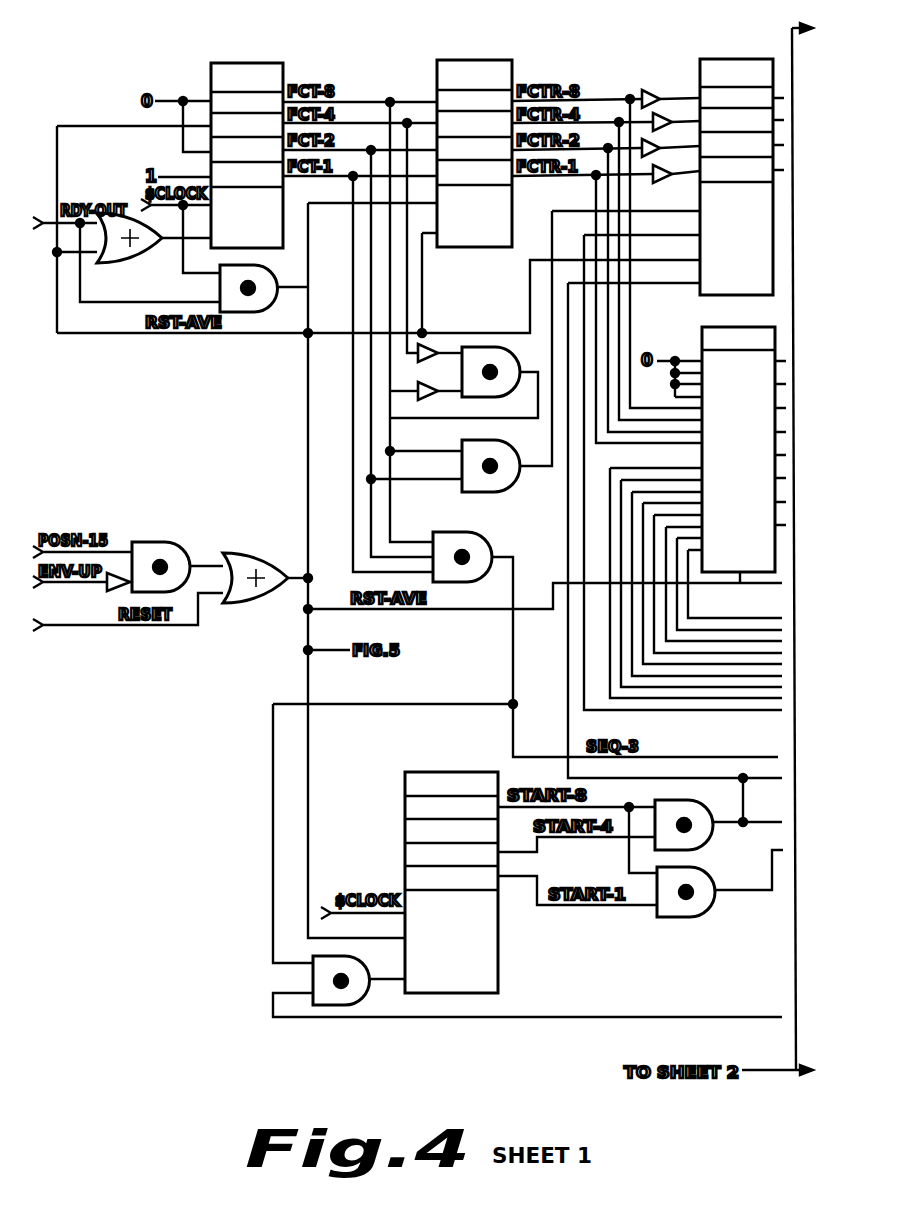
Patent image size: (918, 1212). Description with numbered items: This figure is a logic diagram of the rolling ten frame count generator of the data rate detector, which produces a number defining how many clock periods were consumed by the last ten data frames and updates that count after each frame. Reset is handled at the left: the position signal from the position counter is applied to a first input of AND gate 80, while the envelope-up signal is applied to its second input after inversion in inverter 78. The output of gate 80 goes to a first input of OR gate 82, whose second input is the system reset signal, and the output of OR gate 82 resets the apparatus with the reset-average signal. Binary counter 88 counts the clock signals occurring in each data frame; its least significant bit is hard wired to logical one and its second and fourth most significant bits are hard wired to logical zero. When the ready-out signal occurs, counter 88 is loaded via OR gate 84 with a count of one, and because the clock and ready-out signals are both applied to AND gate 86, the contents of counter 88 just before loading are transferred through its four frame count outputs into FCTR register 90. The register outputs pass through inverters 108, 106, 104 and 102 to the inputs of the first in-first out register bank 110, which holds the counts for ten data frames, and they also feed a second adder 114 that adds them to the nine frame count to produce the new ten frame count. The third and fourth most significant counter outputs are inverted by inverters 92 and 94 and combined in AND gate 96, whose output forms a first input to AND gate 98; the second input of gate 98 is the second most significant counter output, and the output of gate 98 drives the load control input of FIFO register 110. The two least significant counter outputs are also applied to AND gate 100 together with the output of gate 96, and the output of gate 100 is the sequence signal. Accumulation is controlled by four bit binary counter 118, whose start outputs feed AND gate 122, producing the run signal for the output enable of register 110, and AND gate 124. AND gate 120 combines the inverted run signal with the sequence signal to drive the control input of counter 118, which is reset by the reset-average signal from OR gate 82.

The inverter 78 is at (116, 592).
The AND gate 80 is at (179, 543).
The OR gate 82 is at (272, 557).
The OR gate 84 is at (135, 263).
The AND gate 86 is at (283, 300).
The binary counter 88 is at (283, 70).
The FCTR register 90 is at (512, 70).
The inverter 92 is at (432, 348).
The inverter 94 is at (416, 397).
The AND gate 96 is at (510, 348).
The AND gate 98 is at (518, 443).
The AND gate 100 is at (485, 534).
The inverter 102 is at (656, 91).
The inverter 104 is at (663, 114).
The inverter 106 is at (655, 140).
The inverter 108 is at (661, 166).
The first in-first out register bank 110 is at (702, 59).
The second adder 114 is at (702, 327).
The four bit binary counter 118 is at (437, 772).
The AND gate 120 is at (357, 957).
The AND gate 122 is at (691, 800).
The AND gate 124 is at (697, 866).